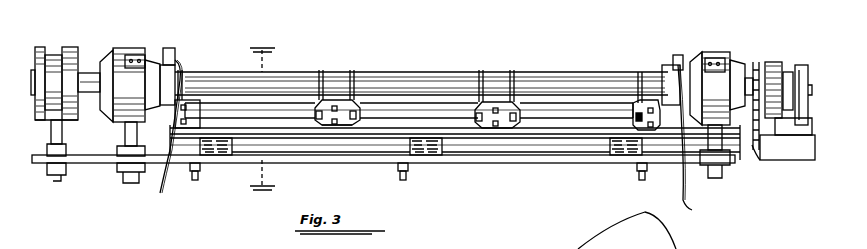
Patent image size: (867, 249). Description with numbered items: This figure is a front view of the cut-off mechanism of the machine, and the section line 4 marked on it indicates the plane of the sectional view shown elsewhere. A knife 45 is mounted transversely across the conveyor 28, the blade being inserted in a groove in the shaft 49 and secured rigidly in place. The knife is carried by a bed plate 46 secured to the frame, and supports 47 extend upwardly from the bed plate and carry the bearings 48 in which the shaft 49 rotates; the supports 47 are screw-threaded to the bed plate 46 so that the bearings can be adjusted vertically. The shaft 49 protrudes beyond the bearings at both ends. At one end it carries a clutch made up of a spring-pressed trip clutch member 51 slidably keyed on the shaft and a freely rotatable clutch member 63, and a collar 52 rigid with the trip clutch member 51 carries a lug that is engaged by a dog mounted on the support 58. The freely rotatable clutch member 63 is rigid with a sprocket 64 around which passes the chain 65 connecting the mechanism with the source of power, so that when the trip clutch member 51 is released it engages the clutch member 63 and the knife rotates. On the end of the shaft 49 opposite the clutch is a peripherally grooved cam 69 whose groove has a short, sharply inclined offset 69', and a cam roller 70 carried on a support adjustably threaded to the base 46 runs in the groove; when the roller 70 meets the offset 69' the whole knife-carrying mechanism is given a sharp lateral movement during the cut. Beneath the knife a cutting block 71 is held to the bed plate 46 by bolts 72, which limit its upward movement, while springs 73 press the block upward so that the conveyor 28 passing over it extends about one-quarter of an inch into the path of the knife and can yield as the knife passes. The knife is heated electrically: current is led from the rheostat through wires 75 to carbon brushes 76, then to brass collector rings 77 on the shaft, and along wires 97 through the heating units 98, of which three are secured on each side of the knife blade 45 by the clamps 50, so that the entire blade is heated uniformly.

The section line 4— 4 is at (262, 119).
The conveyor 28 is at (340, 136).
The knife 45 is at (537, 160).
The bed plate 46 is at (561, 160).
The supports 47 is at (120, 180).
The bearings 48 is at (108, 60).
The shaft 49 is at (89, 93).
The clamps 50 is at (328, 122).
The trip clutch member 51 is at (787, 72).
The collar 52 is at (800, 72).
The support 58 is at (795, 162).
The freely rotatable clutch member 63 is at (770, 63).
The sprocket 64 is at (753, 65).
The chain 65 is at (758, 160).
The peripherally grooved cam 69 is at (54, 68).
The offset 69' is at (50, 131).
The cam roller 70 is at (60, 123).
The cutting block 71 is at (587, 150).
The bolts 72 is at (197, 181).
The springs 73 is at (222, 155).
The wires 75 is at (180, 62).
The carbon brushes 76 is at (176, 95).
The brass collector rings 77 is at (166, 100).
The wires 97 is at (223, 100).
The heating units 98 is at (266, 108).